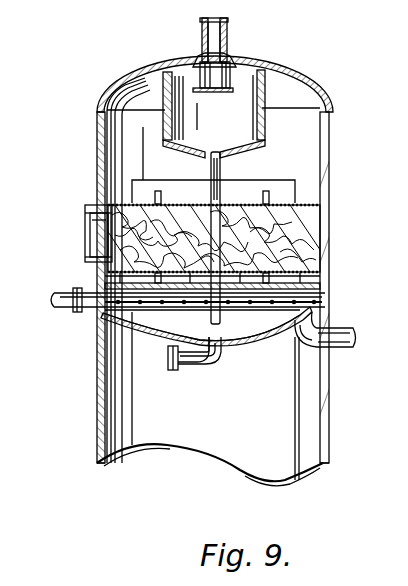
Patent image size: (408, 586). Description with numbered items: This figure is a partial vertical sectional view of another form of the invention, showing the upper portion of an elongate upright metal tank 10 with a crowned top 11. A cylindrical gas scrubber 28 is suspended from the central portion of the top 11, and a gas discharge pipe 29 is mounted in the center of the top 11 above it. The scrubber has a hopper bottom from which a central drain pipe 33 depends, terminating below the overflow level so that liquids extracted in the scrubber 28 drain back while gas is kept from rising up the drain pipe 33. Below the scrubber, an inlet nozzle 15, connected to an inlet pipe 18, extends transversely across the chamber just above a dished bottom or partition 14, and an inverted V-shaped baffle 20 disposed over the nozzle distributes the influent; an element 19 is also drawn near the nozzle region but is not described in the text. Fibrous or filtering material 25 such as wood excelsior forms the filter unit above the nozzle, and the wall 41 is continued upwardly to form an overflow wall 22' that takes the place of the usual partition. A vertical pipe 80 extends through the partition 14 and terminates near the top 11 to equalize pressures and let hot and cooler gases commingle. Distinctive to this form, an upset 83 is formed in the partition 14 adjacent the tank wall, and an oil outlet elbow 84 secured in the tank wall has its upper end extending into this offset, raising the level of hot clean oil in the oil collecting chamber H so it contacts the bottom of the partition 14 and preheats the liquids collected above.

The tank 10 is at (329, 132).
The crowned top 11 is at (304, 80).
The dished bottom or partition 14 is at (250, 342).
The inlet nozzle 15 is at (95, 308).
The inlet pipe 18 is at (58, 307).
The collecting cup 19 is at (187, 309).
The inverted V-shaped baffle 20 is at (306, 283).
The overflow wall 22' is at (144, 270).
The fibrous or filtering material 25 is at (320, 220).
The cylindrical gas scrubber 28 is at (262, 127).
The gas discharge pipe 29 is at (228, 28).
The central drain pipe 33 is at (222, 166).
The wall 41 is at (170, 442).
The vertical pipe 80 is at (222, 193).
The upset 83 is at (280, 315).
The oil outlet elbow 84 is at (297, 338).
The oil collecting chamber H is at (310, 398).